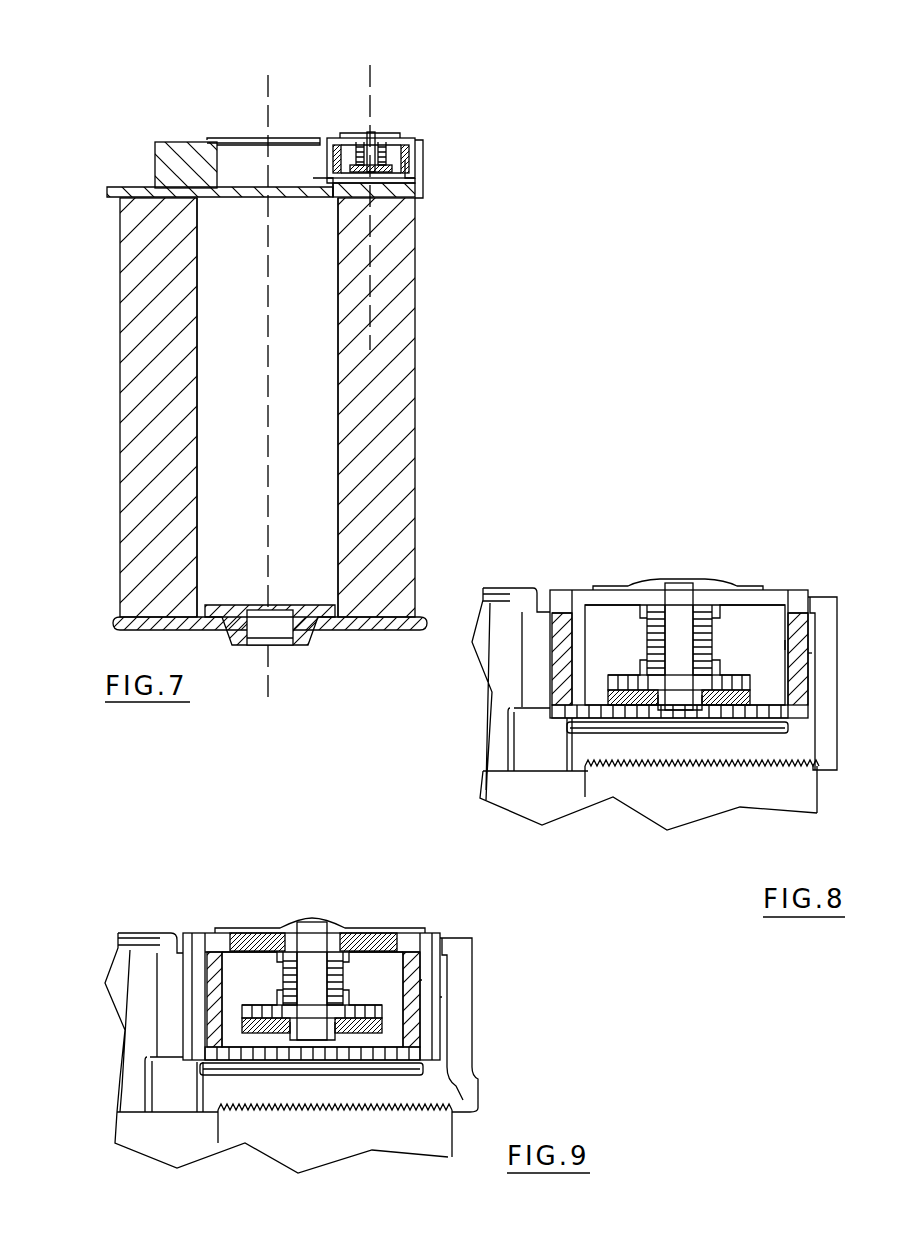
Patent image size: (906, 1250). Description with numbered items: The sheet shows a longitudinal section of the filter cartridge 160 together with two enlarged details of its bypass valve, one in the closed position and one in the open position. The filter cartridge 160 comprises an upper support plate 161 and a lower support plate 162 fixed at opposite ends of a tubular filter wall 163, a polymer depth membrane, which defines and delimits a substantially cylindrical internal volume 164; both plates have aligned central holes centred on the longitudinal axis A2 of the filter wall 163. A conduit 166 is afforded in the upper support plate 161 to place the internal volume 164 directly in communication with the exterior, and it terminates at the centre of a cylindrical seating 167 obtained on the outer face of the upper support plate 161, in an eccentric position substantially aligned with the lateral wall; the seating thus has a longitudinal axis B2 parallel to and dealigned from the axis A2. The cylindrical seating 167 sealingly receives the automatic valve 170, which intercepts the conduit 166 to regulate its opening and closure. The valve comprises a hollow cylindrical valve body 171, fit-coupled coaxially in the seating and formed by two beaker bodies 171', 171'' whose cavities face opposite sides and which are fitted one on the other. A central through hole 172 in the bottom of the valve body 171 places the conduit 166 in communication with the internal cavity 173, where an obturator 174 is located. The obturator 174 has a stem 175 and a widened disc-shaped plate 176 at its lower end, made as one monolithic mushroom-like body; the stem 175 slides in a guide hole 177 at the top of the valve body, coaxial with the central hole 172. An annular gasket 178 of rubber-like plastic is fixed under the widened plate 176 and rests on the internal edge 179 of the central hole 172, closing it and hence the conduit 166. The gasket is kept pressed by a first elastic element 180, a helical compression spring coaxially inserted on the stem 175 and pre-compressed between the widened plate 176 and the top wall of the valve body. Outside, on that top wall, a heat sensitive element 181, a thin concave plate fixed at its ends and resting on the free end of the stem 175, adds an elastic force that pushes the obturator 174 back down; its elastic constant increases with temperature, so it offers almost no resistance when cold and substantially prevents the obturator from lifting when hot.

In FIG. 7, the filter cartridge 160 is at (158, 108).
In FIG. 7, the upper support plate 161 is at (178, 170).
In FIG. 7, the lower support plate 162 is at (382, 627).
In FIG. 7, the tubular filter wall 163 is at (148, 405).
In FIG. 7, the internal volume 164 is at (292, 487).
In FIG. 7, the conduit 166 is at (372, 210).
In FIG. 8, the conduit 166 is at (570, 727).
In FIG. 9, the conduit 166 is at (200, 1068).
In FIG. 7, the cylindrical seating 167 is at (422, 172).
In FIG. 8, the cylindrical seating 167 is at (816, 653).
In FIG. 9, the cylindrical seating 167 is at (448, 997).
In FIG. 7, the automatic valve 170 is at (410, 126).
In FIG. 8, the automatic valve 170 is at (713, 560).
In FIG. 9, the automatic valve 170 is at (339, 902).
In FIG. 7, the valve body 171 is at (467, 167).
In FIG. 8, the valve body 171 is at (837, 713).
In FIG. 9, the valve body 171 is at (519, 1025).
In FIG. 8, the beaker body 171' is at (510, 644).
In FIG. 9, the beaker body 171' is at (145, 986).
In FIG. 8, the beaker body 171'' is at (481, 675).
In FIG. 9, the beaker body 171'' is at (133, 1003).
In FIG. 7, the central through hole 172 is at (388, 200).
In FIG. 8, the central through hole 172 is at (653, 713).
In FIG. 9, the central through hole 172 is at (285, 1050).
In FIG. 7, the internal cavity 173 is at (362, 138).
In FIG. 8, the internal cavity 173 is at (775, 738).
In FIG. 9, the internal cavity 173 is at (400, 1075).
In FIG. 8, the obturator 174 is at (776, 648).
In FIG. 9, the obturator 174 is at (424, 984).
In FIG. 7, the stem 175 is at (340, 133).
In FIG. 8, the stem 175 is at (680, 640).
In FIG. 9, the stem 175 is at (312, 975).
In FIG. 7, the widened disc-shaped plate 176 is at (378, 137).
In FIG. 8, the widened disc-shaped plate 176 is at (592, 652).
In FIG. 9, the widened disc-shaped plate 176 is at (212, 1000).
In FIG. 8, the guide hole 177 is at (706, 591).
In FIG. 9, the guide hole 177 is at (337, 934).
In FIG. 8, the annular gasket 178 is at (706, 706).
In FIG. 9, the annular gasket 178 is at (340, 1040).
In FIG. 8, the internal edge 179 is at (683, 706).
In FIG. 9, the internal edge 179 is at (312, 1037).
In FIG. 8, the first elastic element 180 is at (628, 660).
In FIG. 9, the first elastic element 180 is at (262, 1005).
In FIG. 8, the heat sensitive element 181 is at (650, 622).
In FIG. 9, the heat sensitive element 181 is at (283, 960).
In FIG. 7, the longitudinal axis A2 is at (265, 103).
In FIG. 7, the longitudinal axis B2 is at (367, 90).